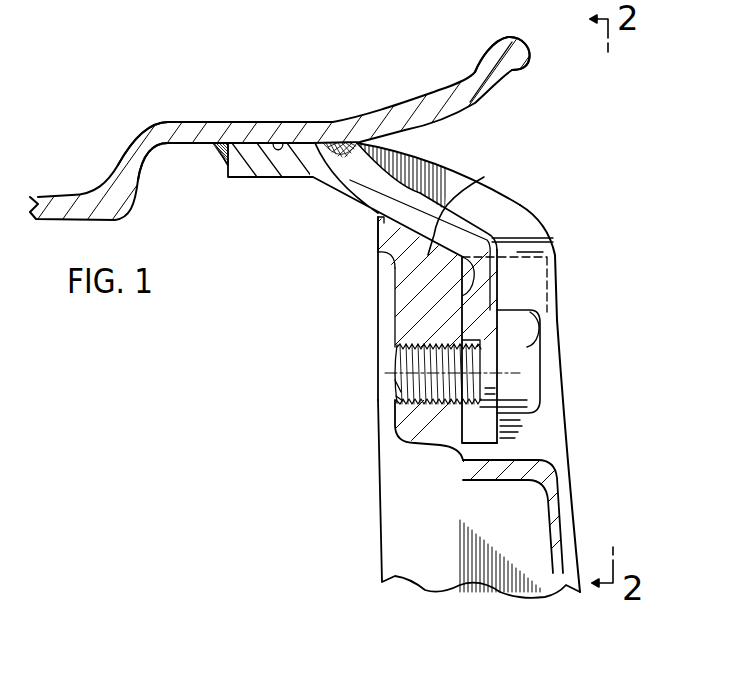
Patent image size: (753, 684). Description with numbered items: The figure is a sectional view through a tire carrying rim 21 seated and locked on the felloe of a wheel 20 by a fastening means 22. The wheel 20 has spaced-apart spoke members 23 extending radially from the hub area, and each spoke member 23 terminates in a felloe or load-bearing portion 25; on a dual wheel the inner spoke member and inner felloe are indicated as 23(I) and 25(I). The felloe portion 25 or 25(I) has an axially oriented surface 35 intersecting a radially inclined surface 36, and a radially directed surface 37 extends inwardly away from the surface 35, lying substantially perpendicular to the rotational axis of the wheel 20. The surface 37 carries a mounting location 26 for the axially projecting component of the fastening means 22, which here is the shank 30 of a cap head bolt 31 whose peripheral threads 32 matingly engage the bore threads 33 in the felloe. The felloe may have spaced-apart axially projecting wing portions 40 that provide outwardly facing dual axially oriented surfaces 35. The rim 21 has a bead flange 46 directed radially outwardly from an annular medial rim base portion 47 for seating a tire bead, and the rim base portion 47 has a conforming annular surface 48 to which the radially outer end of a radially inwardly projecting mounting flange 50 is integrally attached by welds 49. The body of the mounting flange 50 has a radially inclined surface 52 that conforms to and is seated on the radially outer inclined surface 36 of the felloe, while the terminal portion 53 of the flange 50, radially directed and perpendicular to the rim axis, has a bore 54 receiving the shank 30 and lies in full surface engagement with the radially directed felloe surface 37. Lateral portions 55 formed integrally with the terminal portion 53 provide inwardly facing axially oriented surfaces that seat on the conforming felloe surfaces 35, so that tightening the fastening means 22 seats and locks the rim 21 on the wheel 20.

The wheel 20 is at (340, 487).
The tire carrying rim 21 is at (192, 99).
The fastening means 22 is at (625, 335).
The spoke member 23 is at (385, 554).
The felloe 25 is at (374, 278).
The mounting location 26 is at (367, 355).
The shank 30 is at (396, 370).
The cap head bolt 31 is at (527, 357).
The peripheral threads 32 is at (395, 385).
The bore threads 33 is at (382, 400).
The axially oriented surface 35 is at (543, 252).
The radially inclined surface 36 is at (484, 177).
The radially directed surface 37 is at (465, 468).
The wing portion 40 is at (553, 408).
The bead flange 46 is at (490, 54).
The medial rim base portion 47 is at (157, 128).
The conforming annular surface 48 is at (280, 142).
The weld 49 is at (345, 142).
The mounting flange 50 is at (475, 152).
The radially inclined flange surface 52 is at (378, 241).
The terminal portion 53 is at (480, 443).
The bore 54 is at (485, 345).
The lateral portion 55 is at (520, 212).